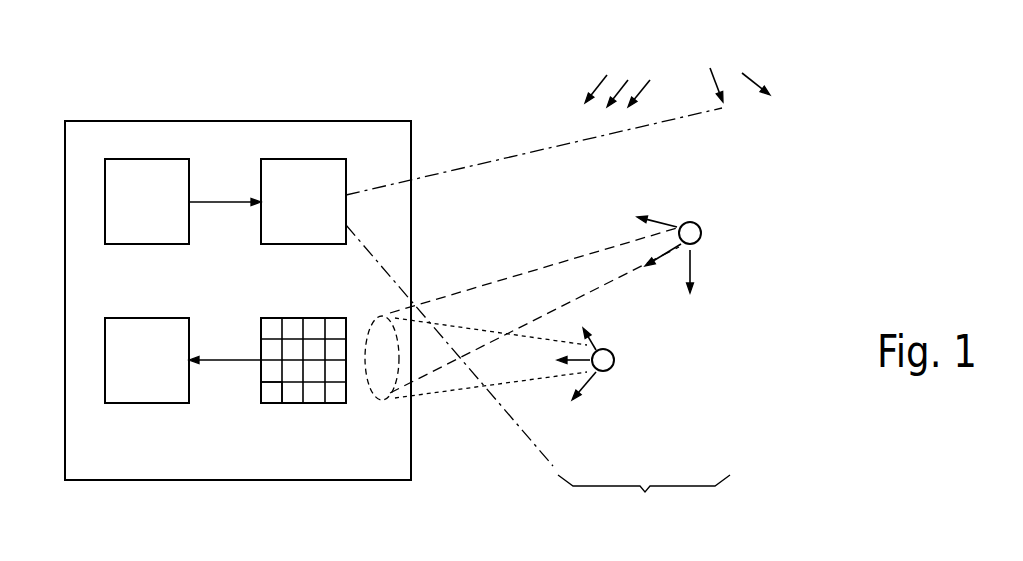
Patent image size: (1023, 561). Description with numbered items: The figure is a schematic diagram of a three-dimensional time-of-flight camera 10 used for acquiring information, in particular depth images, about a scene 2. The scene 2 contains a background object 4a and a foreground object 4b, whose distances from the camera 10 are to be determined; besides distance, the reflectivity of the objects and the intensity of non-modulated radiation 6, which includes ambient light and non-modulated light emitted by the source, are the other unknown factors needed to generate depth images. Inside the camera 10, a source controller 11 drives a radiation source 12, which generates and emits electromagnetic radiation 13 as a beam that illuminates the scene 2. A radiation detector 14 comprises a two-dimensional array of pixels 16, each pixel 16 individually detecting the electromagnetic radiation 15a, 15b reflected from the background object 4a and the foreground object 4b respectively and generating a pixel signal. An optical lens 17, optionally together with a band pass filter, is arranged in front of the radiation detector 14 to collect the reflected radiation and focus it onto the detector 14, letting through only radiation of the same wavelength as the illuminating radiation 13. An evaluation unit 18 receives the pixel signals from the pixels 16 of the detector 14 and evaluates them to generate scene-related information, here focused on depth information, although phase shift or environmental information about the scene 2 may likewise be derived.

The scene 2 is at (644, 499).
The background object 4a is at (702, 230).
The foreground object 4b is at (612, 368).
The non-modulated radiation 6 is at (713, 85).
The 3D ToF camera 10 is at (230, 121).
The source controller 11 is at (147, 244).
The radiation source 12 is at (297, 244).
The electromagnetic radiation 13 is at (505, 158).
The radiation detector 14 is at (292, 403).
The reflected electromagnetic radiation 15a is at (552, 262).
The reflected electromagnetic radiation 15b is at (455, 395).
The pixel 16 is at (265, 367).
The optical lens 17 is at (385, 395).
The evaluation unit 18 is at (148, 403).